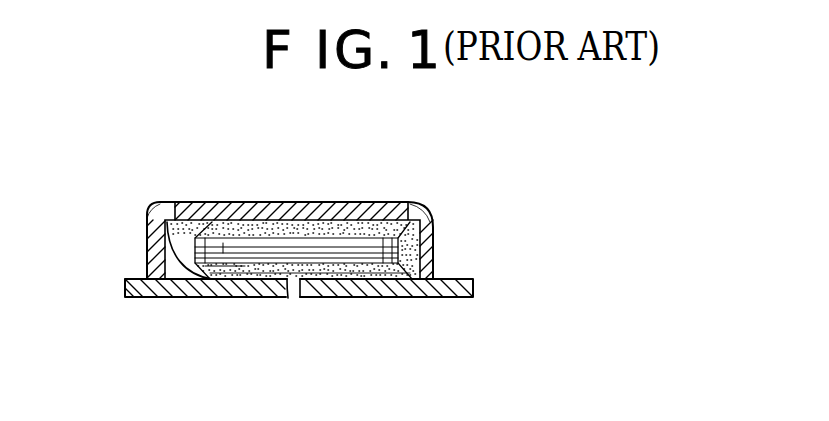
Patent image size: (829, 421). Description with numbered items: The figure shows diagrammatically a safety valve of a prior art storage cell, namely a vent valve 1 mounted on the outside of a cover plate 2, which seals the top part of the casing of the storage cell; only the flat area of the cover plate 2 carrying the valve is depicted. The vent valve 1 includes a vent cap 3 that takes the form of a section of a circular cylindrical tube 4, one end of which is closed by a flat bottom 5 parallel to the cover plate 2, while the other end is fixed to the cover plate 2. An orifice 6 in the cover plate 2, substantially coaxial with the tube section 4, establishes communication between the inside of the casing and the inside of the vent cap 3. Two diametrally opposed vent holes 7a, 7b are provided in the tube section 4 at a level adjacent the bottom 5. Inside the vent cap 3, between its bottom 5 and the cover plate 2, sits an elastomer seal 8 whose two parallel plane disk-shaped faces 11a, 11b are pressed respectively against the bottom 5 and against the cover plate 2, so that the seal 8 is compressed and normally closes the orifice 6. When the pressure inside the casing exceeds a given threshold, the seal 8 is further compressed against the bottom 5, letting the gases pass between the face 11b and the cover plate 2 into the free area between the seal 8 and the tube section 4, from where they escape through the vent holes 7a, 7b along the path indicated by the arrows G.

The vent valve 1 is at (228, 188).
The cover plate 2 is at (415, 297).
The vent cap 3 is at (387, 202).
The circular cylindrical tube section 4 is at (147, 255).
The bottom 5 is at (338, 213).
The orifice 6 is at (300, 297).
The vent hole 7a is at (148, 220).
The vent hole 7b is at (433, 222).
The seal 8 is at (445, 248).
The plane disk-shaped face 11a is at (258, 215).
The plane disk-shaped face 11b is at (238, 298).
The arrows G is at (158, 222).